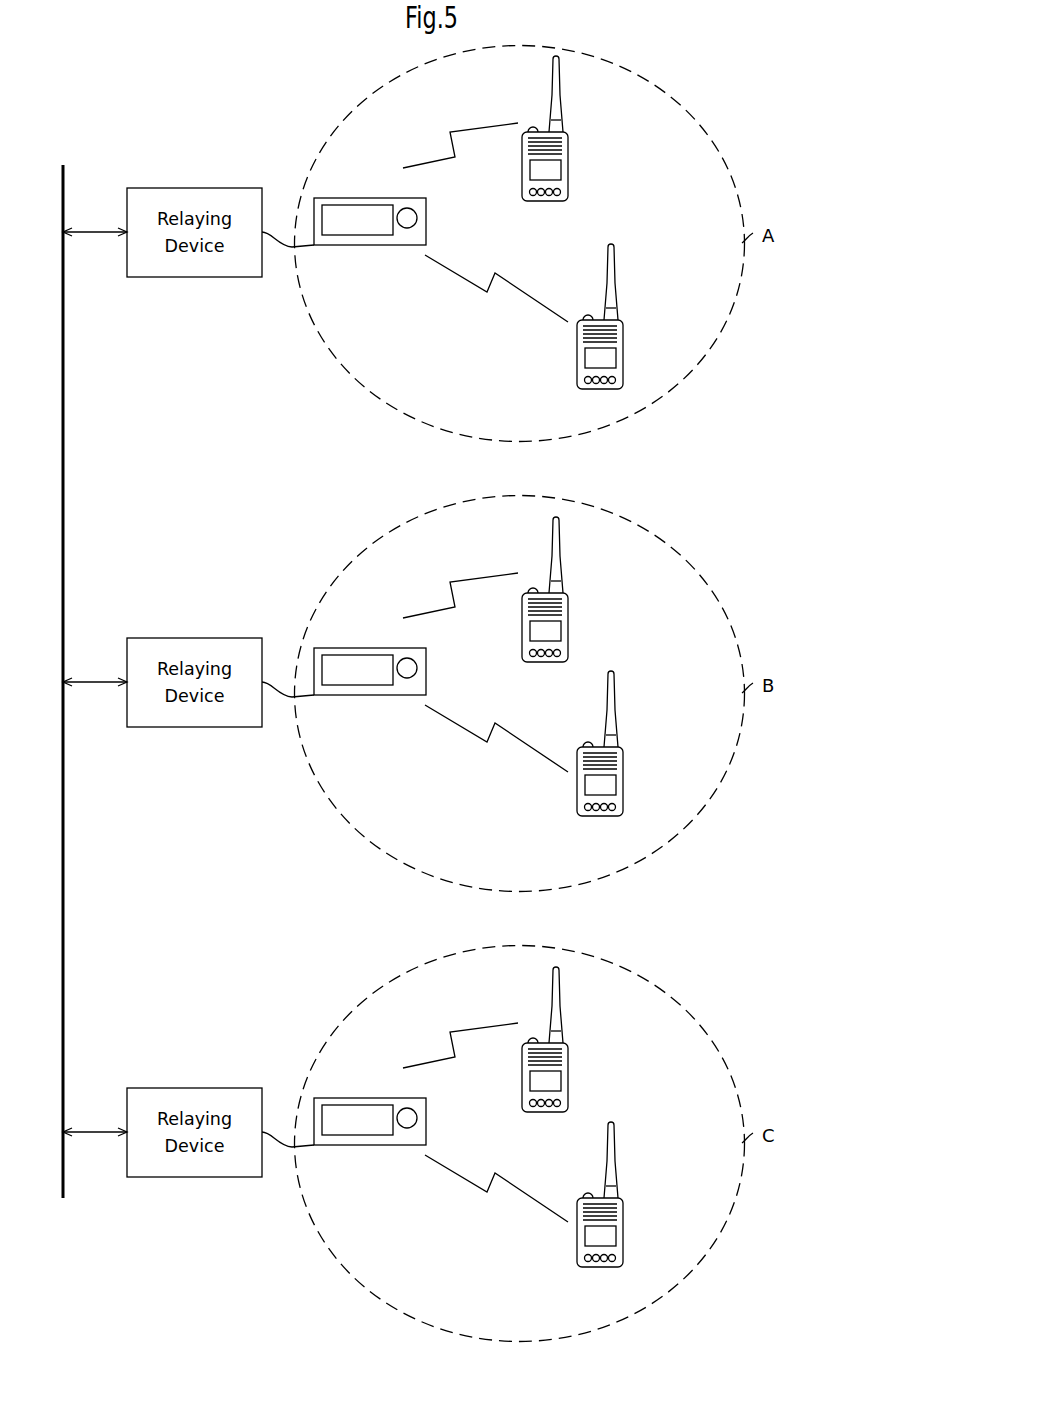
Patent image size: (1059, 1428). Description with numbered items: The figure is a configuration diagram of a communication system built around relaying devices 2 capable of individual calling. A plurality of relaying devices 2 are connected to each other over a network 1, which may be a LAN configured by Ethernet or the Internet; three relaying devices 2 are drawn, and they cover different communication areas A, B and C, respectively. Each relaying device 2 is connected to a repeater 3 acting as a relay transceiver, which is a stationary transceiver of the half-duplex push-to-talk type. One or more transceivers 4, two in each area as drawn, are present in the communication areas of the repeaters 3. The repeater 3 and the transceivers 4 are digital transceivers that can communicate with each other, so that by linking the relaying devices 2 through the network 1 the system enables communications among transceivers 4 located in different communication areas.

The network 1 is at (63, 452).
The relaying device 2 is at (182, 188).
The repeater 3 is at (426, 199).
The transceiver 4 is at (568, 170).